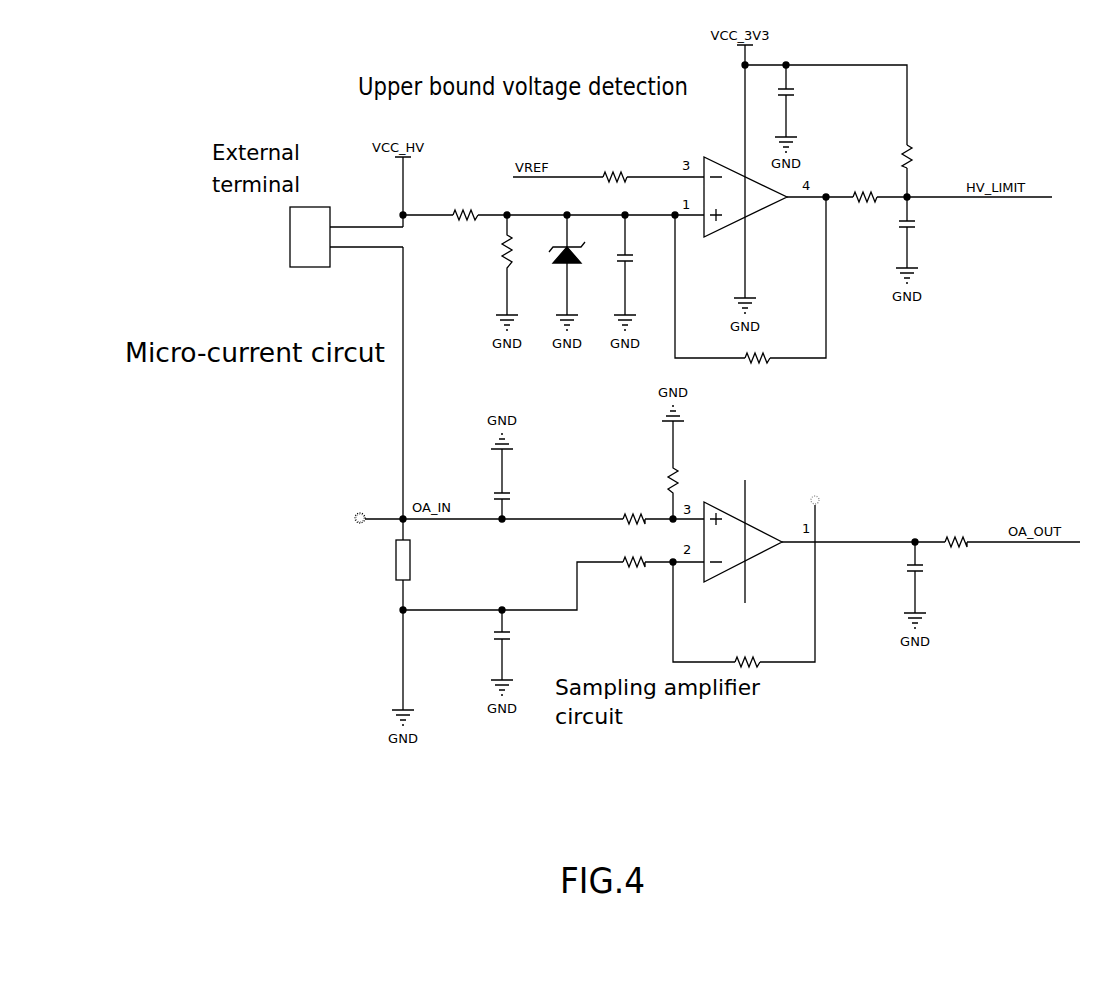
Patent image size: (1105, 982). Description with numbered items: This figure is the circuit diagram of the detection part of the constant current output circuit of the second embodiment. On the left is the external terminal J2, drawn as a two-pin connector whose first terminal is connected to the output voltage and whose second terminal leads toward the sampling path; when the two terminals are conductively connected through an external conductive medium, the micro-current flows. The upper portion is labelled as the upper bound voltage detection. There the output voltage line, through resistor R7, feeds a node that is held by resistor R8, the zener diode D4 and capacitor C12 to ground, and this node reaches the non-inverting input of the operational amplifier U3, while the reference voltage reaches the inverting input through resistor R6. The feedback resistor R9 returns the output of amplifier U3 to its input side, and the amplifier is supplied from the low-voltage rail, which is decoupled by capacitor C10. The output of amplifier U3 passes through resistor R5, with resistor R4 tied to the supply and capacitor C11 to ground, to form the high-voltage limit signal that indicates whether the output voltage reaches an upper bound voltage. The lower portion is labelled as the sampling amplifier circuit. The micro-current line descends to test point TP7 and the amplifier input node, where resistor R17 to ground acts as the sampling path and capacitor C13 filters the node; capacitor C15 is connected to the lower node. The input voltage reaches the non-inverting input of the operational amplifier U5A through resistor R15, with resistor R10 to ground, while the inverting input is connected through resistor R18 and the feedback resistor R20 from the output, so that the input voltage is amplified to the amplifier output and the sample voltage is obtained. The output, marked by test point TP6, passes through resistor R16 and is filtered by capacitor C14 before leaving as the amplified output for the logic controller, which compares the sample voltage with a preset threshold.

The external terminal J2 is at (324, 245).
The resistor R7 is at (469, 208).
The resistor R8 is at (515, 265).
The zener diode D4 is at (578, 265).
The capacitor C12 is at (641, 265).
The resistor R6 is at (615, 184).
The operational amplifier U3 is at (742, 190).
The feedback resistor R9 is at (742, 351).
The capacitor C10 is at (800, 101).
The resistor R4 is at (916, 158).
The resistor R5 is at (864, 188).
The capacitor C11 is at (921, 241).
The test point TP7 is at (359, 506).
The resistor R17 is at (381, 560).
The capacitor C13 is at (492, 484).
The capacitor C15 is at (517, 645).
The resistor R15 is at (615, 512).
The resistor R18 is at (636, 568).
The resistor R10 is at (657, 470).
The operational amplifier U5A is at (742, 542).
The feedback resistor R20 is at (740, 655).
The test point TP6 is at (810, 490).
The resistor R16 is at (941, 535).
The capacitor C14 is at (930, 577).